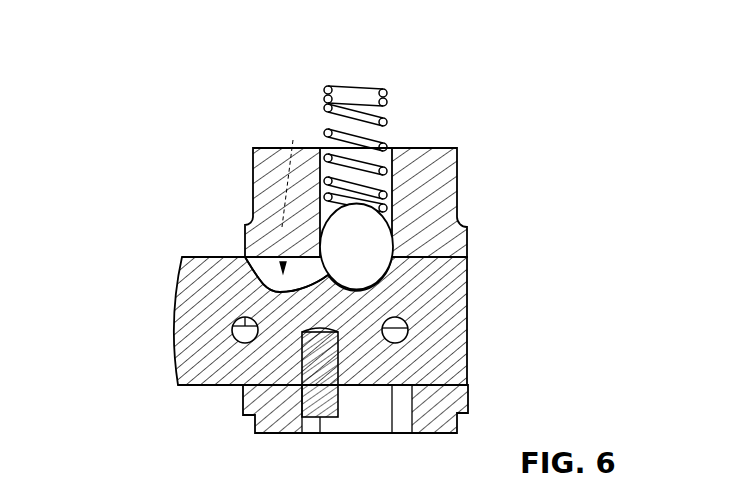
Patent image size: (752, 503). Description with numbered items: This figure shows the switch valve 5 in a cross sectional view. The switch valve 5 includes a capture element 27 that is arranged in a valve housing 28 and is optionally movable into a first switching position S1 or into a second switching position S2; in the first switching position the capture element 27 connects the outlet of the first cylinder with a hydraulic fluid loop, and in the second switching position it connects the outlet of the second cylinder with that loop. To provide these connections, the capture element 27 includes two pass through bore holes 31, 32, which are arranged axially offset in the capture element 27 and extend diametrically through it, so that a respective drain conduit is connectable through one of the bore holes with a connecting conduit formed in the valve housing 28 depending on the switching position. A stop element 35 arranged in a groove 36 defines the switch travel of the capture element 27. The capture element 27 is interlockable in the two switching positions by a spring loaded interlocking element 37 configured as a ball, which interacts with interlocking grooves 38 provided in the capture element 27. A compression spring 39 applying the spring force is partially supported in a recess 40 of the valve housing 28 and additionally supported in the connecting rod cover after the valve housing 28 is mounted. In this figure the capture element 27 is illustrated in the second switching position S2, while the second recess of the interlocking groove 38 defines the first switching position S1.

The switch valve 5 is at (198, 116).
The capture element 27 is at (173, 278).
The valve housing 28 is at (262, 162).
The pass through bore hole 31 is at (243, 330).
The pass through bore hole 32 is at (396, 332).
The stop element 35 is at (311, 428).
The groove 36 is at (366, 415).
The interlocking element 37 is at (347, 254).
The interlocking grooves 38 is at (273, 287).
The compression spring 39 is at (358, 92).
The recess 40 is at (390, 152).
The first switching position S1 is at (294, 172).
The second switching position S2 is at (402, 217).